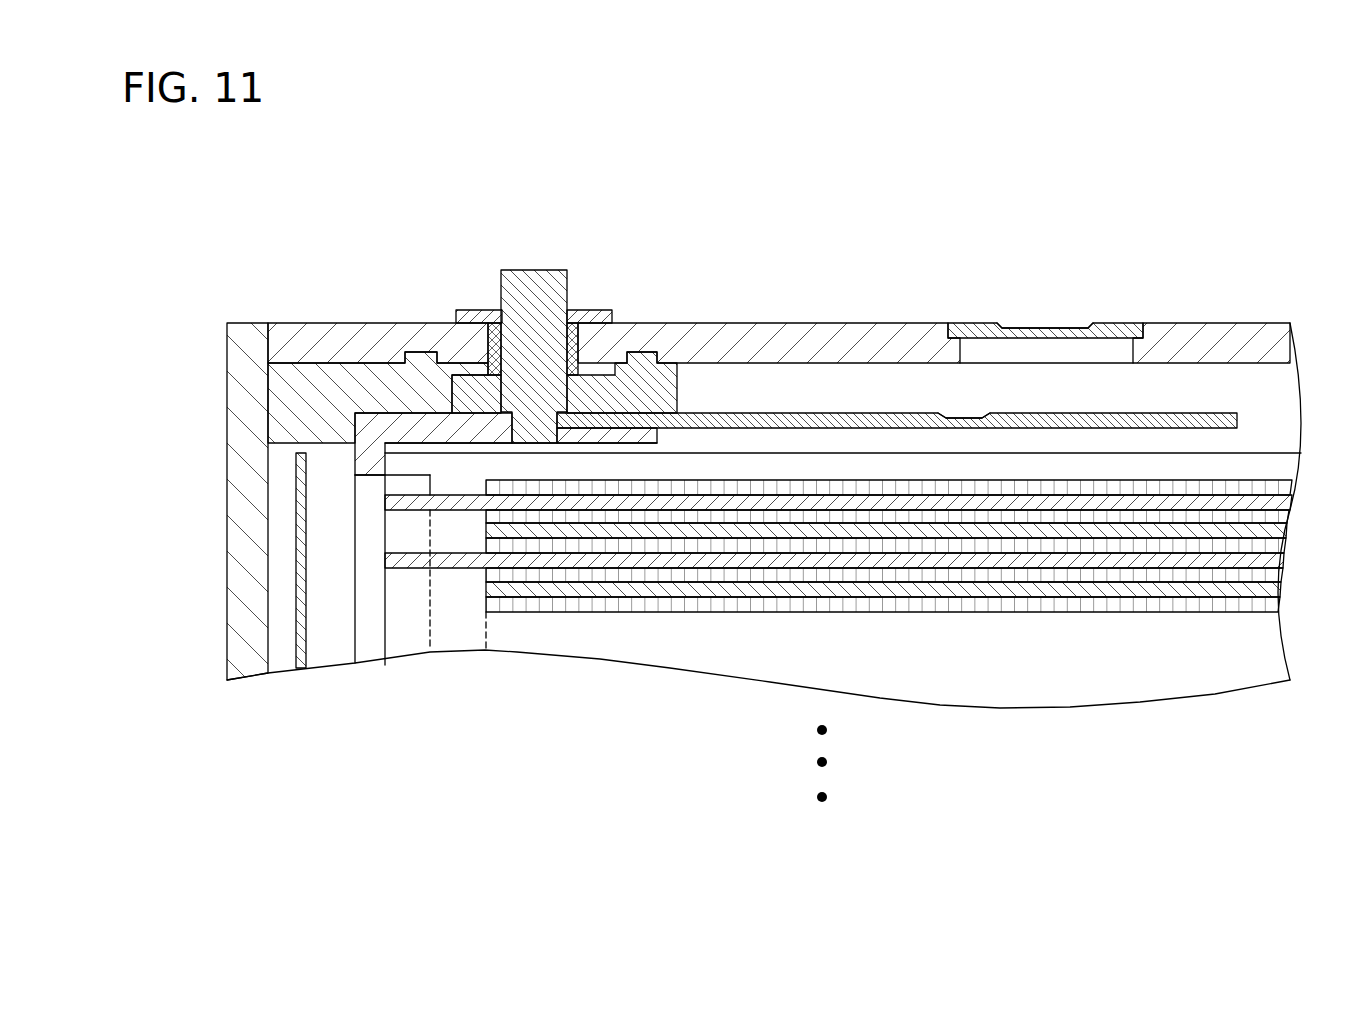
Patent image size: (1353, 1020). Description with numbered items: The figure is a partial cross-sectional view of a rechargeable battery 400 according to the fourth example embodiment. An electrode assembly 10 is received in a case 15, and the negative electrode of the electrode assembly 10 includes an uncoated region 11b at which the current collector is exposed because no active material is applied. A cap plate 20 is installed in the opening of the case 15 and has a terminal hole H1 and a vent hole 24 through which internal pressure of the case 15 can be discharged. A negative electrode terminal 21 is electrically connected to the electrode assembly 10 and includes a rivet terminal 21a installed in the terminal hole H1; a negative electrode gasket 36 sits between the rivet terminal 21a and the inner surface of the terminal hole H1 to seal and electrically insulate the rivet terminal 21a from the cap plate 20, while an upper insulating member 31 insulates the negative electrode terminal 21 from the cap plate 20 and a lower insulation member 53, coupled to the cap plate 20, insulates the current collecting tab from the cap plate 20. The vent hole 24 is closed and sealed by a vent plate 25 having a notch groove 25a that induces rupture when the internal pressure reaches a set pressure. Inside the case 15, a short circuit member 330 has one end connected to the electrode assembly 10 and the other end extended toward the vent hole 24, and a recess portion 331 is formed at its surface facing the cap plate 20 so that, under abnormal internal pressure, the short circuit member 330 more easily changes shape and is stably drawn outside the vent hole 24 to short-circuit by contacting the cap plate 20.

The rechargeable battery 400 is at (814, 160).
The electrode assembly 10 is at (1022, 633).
The uncoated region 11b is at (453, 562).
The case 15 is at (248, 536).
The cap plate 20 is at (720, 343).
The negative electrode terminal 21 is at (546, 258).
The rivet terminal 21a is at (541, 440).
The vent hole 24 is at (962, 355).
The vent plate 25 is at (1133, 330).
The notch groove 25a is at (1063, 325).
The upper insulating member 31 is at (590, 317).
The negative electrode gasket 36 is at (495, 350).
The lower insulation member 53 is at (300, 388).
The short circuit member 330 is at (813, 418).
The recess portion 331 is at (954, 417).
The terminal hole H1 is at (502, 338).